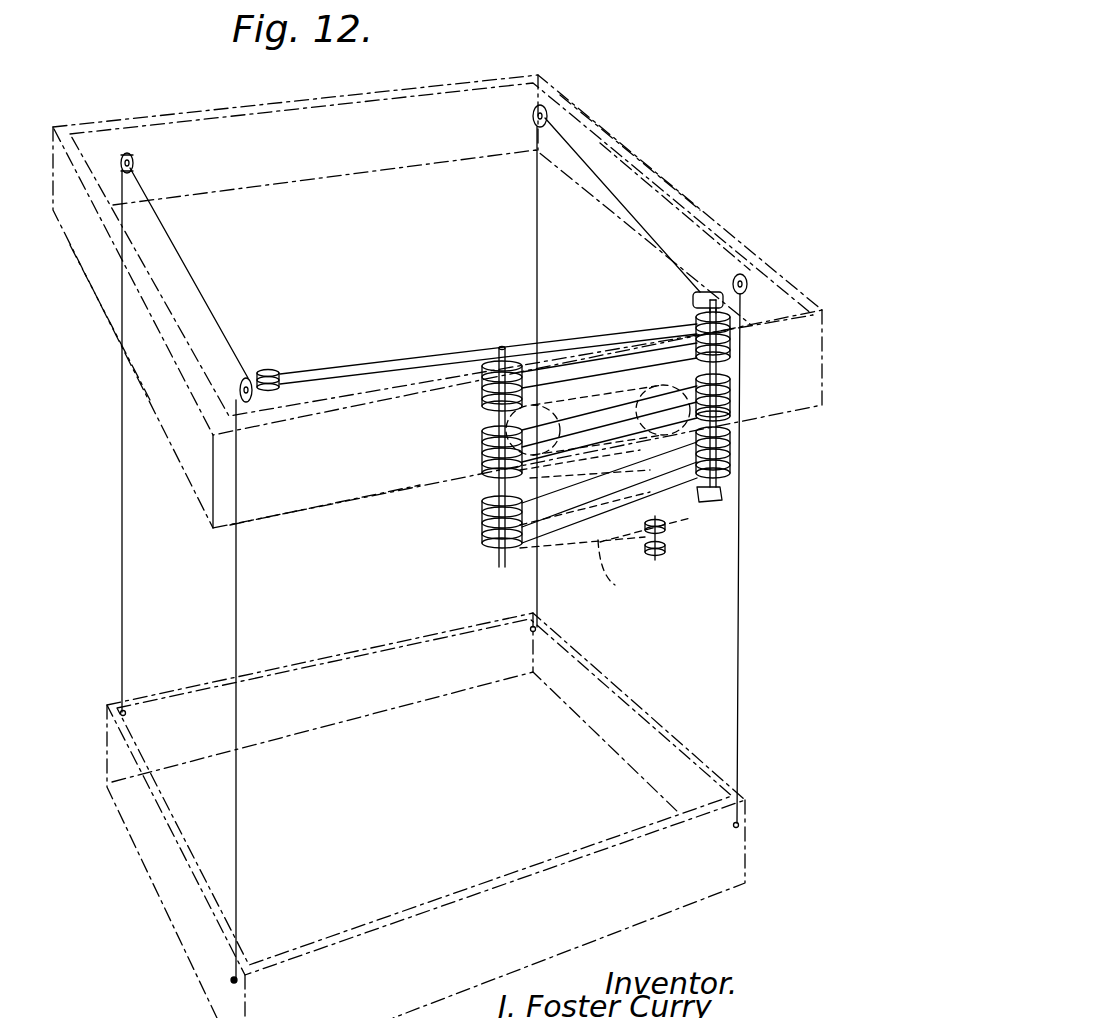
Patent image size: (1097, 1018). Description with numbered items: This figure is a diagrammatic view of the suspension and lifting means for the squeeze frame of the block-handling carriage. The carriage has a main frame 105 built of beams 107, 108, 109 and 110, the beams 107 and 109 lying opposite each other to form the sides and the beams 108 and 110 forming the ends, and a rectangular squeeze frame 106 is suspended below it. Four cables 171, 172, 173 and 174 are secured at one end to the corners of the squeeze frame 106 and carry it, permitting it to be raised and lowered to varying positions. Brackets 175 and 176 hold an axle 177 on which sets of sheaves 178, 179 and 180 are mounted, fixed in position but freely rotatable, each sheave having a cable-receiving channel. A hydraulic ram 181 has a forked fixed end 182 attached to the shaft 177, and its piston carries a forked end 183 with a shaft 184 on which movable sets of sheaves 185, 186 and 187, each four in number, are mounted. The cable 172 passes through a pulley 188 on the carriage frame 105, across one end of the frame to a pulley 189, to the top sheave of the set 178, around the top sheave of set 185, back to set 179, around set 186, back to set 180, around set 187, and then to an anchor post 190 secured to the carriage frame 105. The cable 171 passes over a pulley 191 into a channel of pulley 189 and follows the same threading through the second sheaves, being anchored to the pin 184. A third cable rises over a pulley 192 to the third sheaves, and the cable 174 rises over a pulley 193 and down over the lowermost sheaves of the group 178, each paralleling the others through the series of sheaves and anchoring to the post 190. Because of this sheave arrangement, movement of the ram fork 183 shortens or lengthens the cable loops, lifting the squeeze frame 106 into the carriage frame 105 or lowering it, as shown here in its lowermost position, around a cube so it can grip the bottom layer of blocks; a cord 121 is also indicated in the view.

The main frame 105 is at (636, 150).
The squeeze frame 106 is at (484, 884).
The beam 107 is at (352, 182).
The beam 108 is at (686, 200).
The beam 109 is at (320, 512).
The beam 110 is at (102, 316).
The cord 121 is at (348, 380).
The cable 171 is at (240, 808).
The cable 172 is at (226, 300).
The cable 173 is at (642, 243).
The cable 174 is at (741, 640).
The bracket 175 is at (724, 498).
The bracket 176 is at (706, 290).
The axle 177 is at (694, 303).
The set of sheaves 178 is at (733, 348).
The set of sheaves 179 is at (733, 392).
The set of sheaves 180 is at (733, 452).
The hydraulic ram 181 is at (556, 452).
The forked fixed end 182 is at (724, 372).
The forked end 183 is at (588, 394).
The shaft 184 is at (500, 346).
The set of sheaves 185 is at (481, 388).
The set of sheaves 186 is at (481, 455).
The set of sheaves 187 is at (481, 530).
The pulley 188 is at (136, 161).
The pulley 189 is at (276, 370).
The anchor post 190 is at (667, 531).
The pulley 191 is at (240, 378).
The pulley 192 is at (548, 108).
The pulley 193 is at (750, 285).